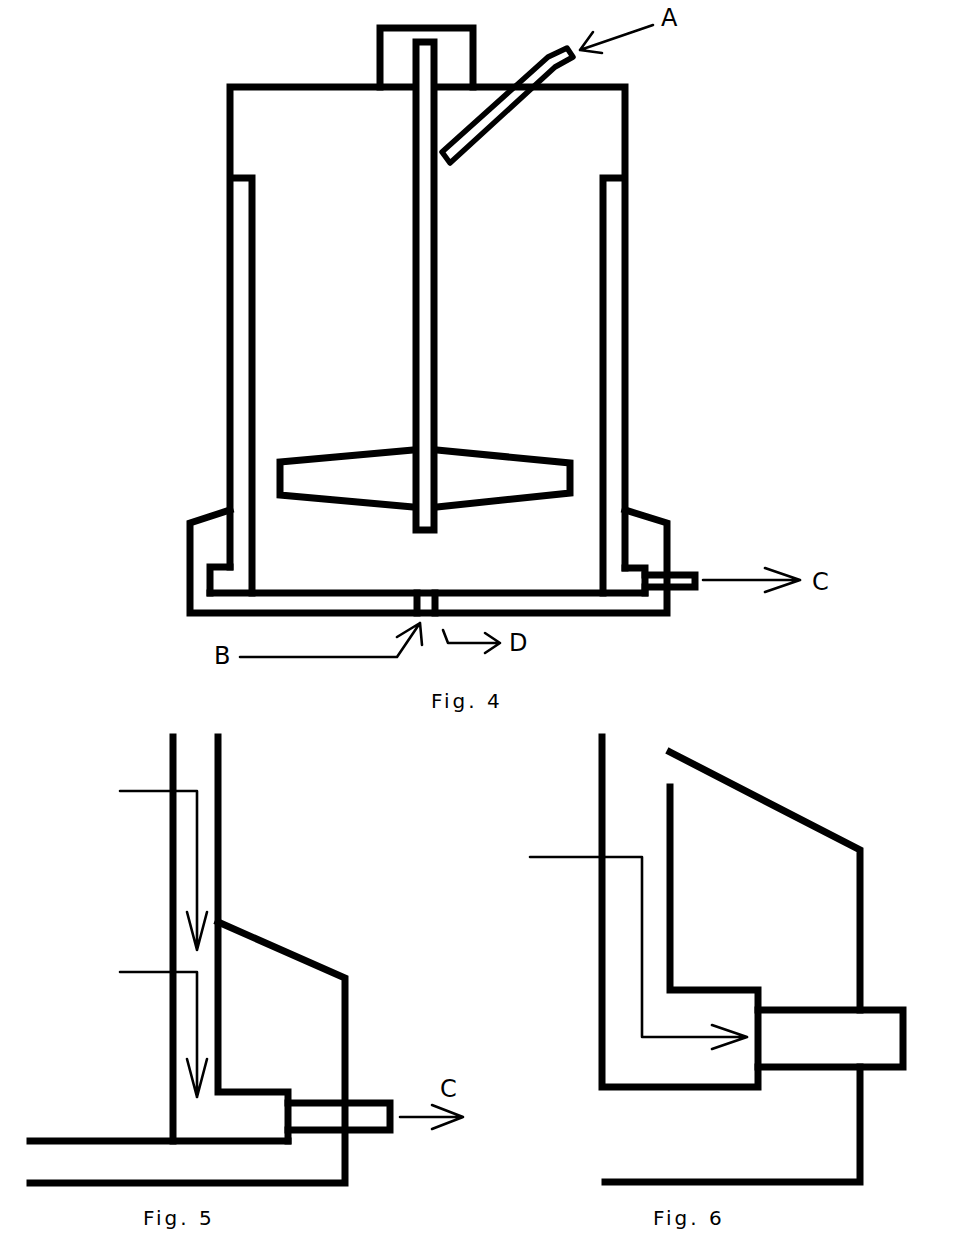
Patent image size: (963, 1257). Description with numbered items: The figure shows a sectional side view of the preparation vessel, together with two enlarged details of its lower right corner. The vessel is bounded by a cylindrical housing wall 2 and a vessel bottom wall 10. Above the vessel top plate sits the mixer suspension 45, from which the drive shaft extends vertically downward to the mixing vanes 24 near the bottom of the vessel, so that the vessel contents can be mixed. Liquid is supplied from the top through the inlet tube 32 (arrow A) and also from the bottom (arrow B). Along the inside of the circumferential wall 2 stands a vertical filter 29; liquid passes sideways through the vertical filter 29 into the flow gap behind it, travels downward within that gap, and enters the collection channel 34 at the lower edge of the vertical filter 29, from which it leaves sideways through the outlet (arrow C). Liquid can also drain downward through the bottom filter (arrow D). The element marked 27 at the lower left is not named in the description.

The cylindrical housing wall 2 is at (533, 185).
The vessel bottom wall 10 is at (428, 583).
The mixing vanes 24 is at (487, 445).
The left bottom passage 27 is at (223, 580).
The vertical filter 29 is at (615, 292).
The inlet tube 32 is at (475, 155).
The collection channel 34 is at (638, 560).
The mixer suspension 45 is at (372, 40).